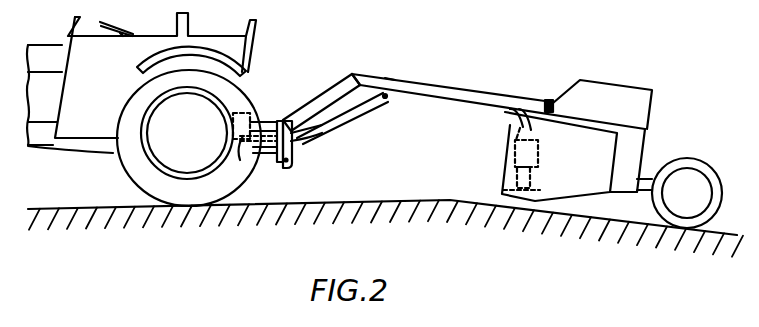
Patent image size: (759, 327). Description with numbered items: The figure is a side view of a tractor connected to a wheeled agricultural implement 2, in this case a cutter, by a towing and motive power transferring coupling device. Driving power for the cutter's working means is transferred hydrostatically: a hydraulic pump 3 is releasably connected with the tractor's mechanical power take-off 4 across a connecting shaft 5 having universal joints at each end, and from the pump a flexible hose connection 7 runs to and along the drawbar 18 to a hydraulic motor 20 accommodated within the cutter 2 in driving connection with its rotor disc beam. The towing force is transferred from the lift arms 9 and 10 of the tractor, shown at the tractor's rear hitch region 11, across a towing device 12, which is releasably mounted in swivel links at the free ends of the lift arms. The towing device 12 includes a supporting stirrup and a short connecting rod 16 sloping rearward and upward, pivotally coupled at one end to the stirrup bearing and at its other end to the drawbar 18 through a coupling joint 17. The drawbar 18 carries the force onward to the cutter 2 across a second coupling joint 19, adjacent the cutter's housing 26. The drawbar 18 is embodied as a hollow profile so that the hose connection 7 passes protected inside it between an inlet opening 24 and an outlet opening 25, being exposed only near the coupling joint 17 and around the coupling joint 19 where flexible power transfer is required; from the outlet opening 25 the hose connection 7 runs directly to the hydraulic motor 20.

The wheeled agricultural implement 2 is at (591, 114).
The hydraulic pump 3 is at (310, 137).
The mechanical power take-off 4 is at (243, 152).
The connecting shaft 5 is at (272, 120).
The flexible hose connection 7 is at (364, 120).
The lift arm 9 is at (278, 164).
The lift arm 10 is at (287, 144).
The tractor hitch 11 is at (243, 140).
The towing device 12 is at (320, 100).
The connecting rod 16 is at (348, 76).
The coupling joint 17 is at (390, 72).
The drawbar 18 is at (467, 91).
The coupling joint 19 is at (548, 100).
The hydraulic motor 20 is at (502, 163).
The inlet opening 24 is at (384, 97).
The outlet opening 25 is at (515, 125).
The implement housing 26 is at (638, 97).